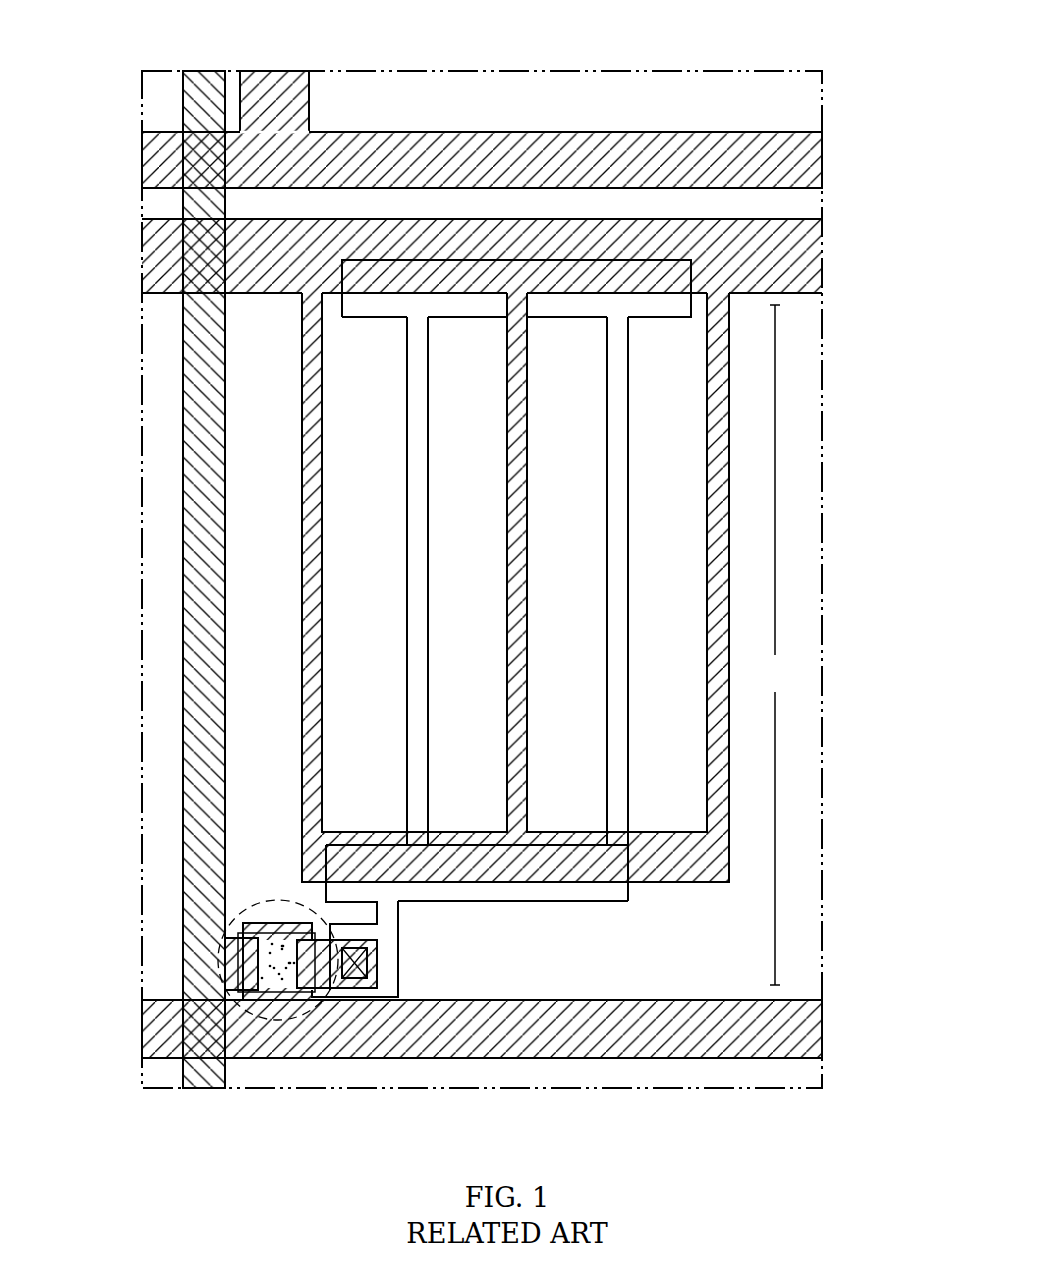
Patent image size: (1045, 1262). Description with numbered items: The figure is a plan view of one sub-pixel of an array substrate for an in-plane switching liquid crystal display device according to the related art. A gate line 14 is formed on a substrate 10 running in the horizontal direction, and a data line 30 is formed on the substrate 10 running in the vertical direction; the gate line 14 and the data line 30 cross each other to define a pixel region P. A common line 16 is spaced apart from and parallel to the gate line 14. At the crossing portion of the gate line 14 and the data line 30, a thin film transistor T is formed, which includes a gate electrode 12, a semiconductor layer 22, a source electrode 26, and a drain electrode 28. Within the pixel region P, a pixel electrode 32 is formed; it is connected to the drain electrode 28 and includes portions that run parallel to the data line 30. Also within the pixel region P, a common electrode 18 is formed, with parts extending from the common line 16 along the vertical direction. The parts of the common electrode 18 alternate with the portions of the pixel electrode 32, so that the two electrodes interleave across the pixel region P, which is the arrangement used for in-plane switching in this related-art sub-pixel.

The substrate 10 is at (828, 578).
The gate electrode 12 is at (273, 923).
The gate line 14 is at (534, 126).
The common line 16 is at (772, 214).
The common electrode 18 is at (729, 457).
The semiconductor layer 22 is at (278, 992).
The source electrode 26 is at (250, 940).
The drain electrode 28 is at (343, 992).
The data line 30 is at (200, 788).
The pixel electrode 32 is at (628, 650).
The pixel region P is at (775, 645).
The thin film transistor T is at (248, 1002).